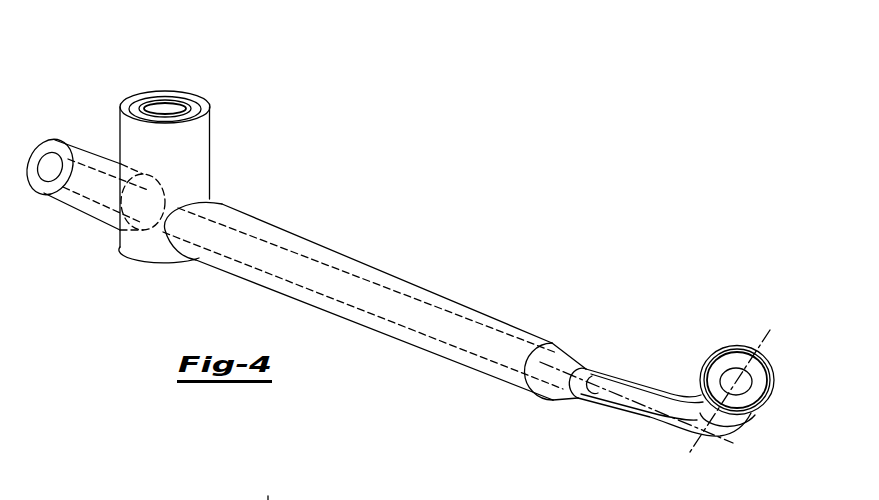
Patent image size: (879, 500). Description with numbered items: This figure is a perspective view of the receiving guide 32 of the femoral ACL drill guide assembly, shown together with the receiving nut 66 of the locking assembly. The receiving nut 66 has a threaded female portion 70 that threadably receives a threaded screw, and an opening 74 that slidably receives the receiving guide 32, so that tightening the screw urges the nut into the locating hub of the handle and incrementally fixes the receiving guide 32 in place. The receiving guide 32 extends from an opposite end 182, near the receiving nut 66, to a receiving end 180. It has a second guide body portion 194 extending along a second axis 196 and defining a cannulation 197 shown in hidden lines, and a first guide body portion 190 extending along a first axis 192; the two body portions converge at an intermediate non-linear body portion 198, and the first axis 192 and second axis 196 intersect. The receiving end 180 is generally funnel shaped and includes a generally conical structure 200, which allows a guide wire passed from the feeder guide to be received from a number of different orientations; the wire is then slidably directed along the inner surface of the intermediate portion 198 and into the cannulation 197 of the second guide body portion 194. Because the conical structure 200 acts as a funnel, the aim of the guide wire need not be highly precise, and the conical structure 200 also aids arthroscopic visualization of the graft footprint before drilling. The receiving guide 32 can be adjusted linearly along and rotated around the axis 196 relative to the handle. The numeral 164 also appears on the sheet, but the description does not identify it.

The receiving guide 32 is at (390, 281).
The receiving nut 66 is at (195, 140).
The threaded female portion 70 is at (155, 107).
The opening 74 is at (188, 197).
The component 164 is at (268, 486).
The receiving end 180 is at (734, 357).
The opposite end 182 is at (82, 154).
The first guide body portion 190 is at (728, 420).
The first axis 192 is at (760, 330).
The second guide body portion 194 is at (493, 378).
The second axis 196 is at (622, 400).
The cannulation 197 is at (430, 318).
The intermediate non-linear body portion 198 is at (676, 432).
The conical structure 200 is at (725, 380).